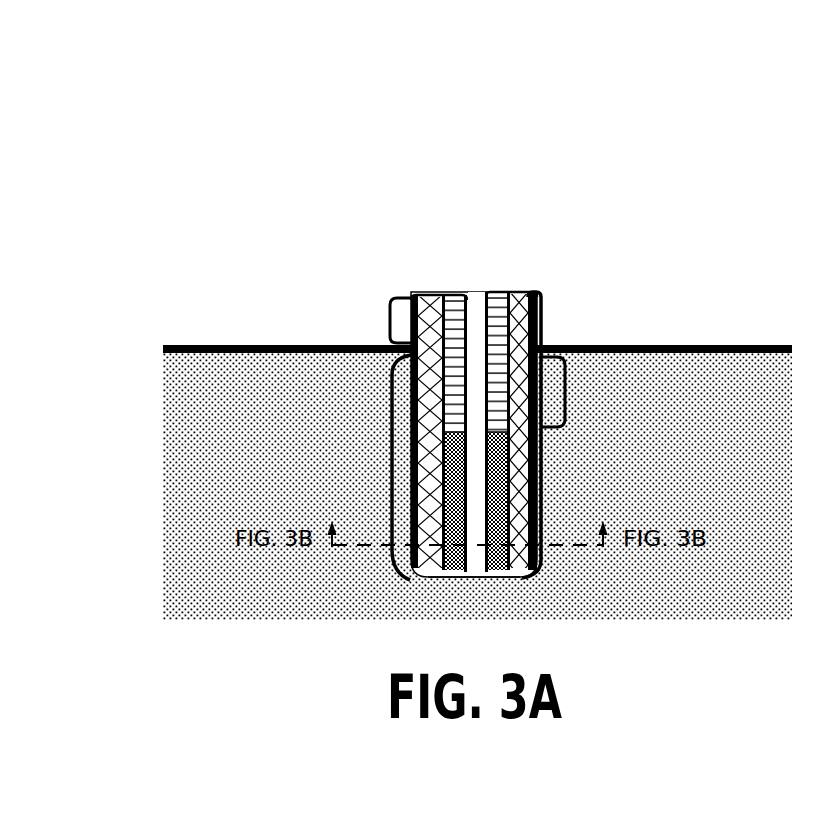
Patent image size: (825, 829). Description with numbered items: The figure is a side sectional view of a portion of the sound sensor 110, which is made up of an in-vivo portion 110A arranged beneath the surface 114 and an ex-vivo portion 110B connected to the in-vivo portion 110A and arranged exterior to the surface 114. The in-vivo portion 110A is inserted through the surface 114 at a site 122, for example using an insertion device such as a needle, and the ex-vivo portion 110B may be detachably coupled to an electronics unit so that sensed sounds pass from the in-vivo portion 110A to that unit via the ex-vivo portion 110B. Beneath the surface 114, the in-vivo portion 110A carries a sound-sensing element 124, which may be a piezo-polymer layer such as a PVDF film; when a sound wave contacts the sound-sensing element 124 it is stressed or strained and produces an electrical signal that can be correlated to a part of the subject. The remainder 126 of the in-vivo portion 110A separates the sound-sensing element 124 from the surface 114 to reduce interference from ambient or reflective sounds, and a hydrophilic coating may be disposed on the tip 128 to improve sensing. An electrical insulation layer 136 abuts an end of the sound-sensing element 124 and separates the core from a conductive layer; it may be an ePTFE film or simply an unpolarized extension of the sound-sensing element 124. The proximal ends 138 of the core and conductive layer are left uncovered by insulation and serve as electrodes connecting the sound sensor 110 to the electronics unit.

The sound sensor 110 is at (412, 347).
The in-vivo portion 110A is at (392, 467).
The ex-vivo portion 110B is at (390, 320).
The surface 114 is at (212, 337).
The site 122 is at (547, 336).
The sound-sensing element 124 is at (450, 513).
The remainder 126 is at (565, 393).
The tip 128 is at (493, 583).
The electrical insulation layer 136 is at (493, 312).
The proximal ends 138 is at (463, 281).